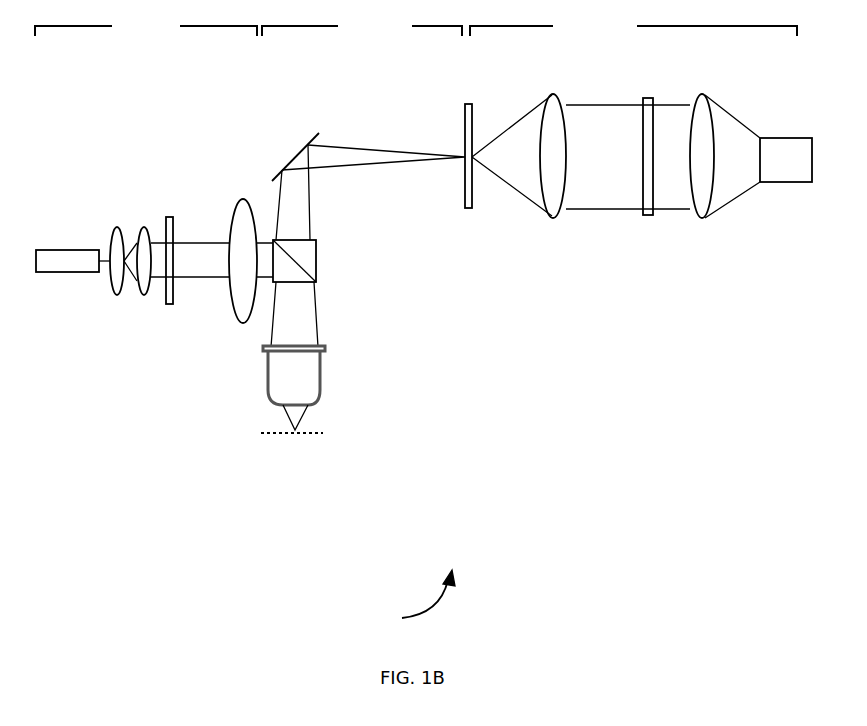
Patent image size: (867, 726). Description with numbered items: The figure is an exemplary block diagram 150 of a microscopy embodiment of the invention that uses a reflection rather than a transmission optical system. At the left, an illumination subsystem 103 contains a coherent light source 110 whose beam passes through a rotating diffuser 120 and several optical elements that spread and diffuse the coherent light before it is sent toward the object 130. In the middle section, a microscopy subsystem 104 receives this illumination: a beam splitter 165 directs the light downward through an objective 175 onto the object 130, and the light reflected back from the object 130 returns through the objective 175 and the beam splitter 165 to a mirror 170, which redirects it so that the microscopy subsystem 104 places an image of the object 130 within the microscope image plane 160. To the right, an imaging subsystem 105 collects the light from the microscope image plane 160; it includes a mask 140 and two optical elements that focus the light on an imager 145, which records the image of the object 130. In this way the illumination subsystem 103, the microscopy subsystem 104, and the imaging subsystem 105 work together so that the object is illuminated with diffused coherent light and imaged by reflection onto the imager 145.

The illumination subsystem 103 is at (146, 26).
The microscopy subsystem 104 is at (362, 26).
The imaging subsystem 105 is at (633, 26).
The coherent light source 110 is at (68, 250).
The rotating diffuser 120 is at (168, 304).
The object 130 is at (298, 433).
The mask 140 is at (650, 216).
The imager 145 is at (787, 138).
The block diagram 150 is at (412, 599).
The microscope image plane 160 is at (472, 210).
The beam splitter 165 is at (316, 262).
The mirror 170 is at (297, 155).
The objective 175 is at (316, 368).